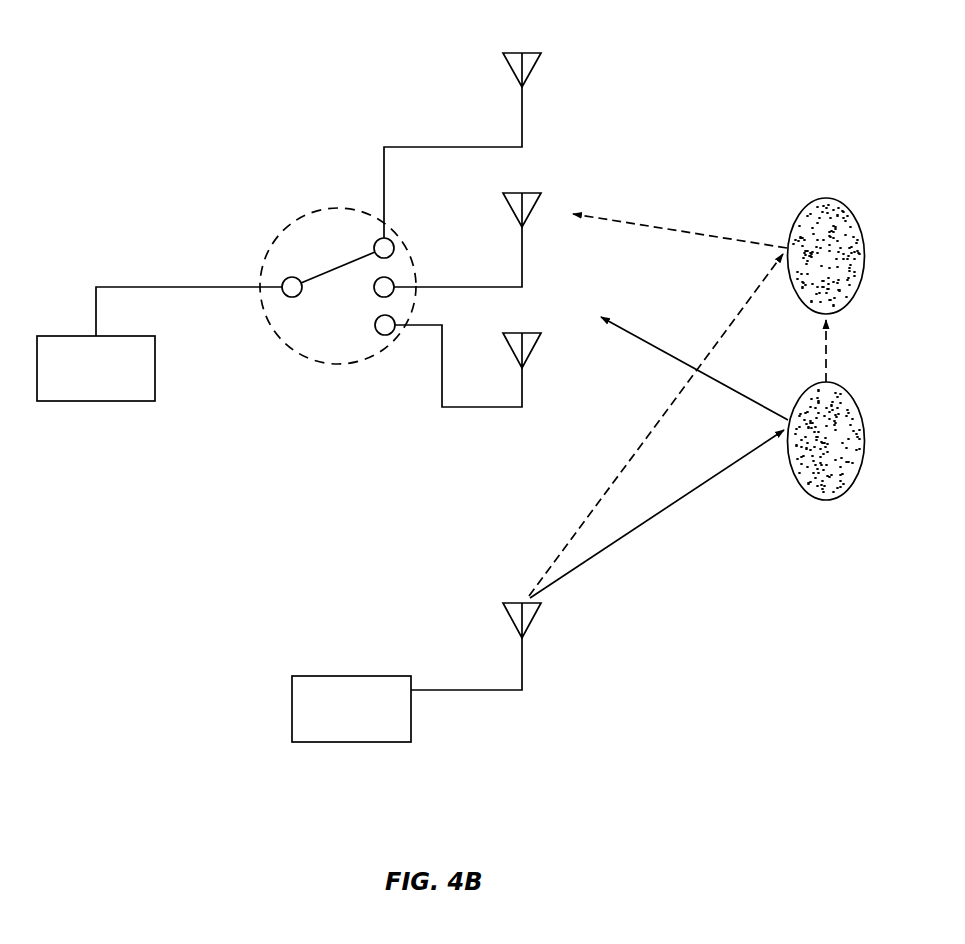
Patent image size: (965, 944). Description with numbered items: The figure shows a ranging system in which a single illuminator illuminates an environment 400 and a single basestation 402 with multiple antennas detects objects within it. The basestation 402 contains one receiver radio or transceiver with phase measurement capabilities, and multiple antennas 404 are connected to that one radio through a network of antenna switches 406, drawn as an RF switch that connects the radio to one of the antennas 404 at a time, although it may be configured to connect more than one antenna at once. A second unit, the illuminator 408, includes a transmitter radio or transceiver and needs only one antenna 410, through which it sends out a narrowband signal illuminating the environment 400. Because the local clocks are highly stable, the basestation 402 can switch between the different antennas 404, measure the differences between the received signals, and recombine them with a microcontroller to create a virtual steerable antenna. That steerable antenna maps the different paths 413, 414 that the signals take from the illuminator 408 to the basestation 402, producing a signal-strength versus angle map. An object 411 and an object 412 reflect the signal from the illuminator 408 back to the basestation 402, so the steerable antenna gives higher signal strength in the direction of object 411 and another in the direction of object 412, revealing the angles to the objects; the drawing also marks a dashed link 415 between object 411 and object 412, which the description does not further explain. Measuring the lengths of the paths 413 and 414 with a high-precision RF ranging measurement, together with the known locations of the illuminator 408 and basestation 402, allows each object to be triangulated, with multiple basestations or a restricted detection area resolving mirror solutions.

The environment 400 is at (259, 502).
The basestation 402 is at (107, 402).
The antennas 404 is at (463, 79).
The antenna switches 406 is at (278, 336).
The illuminator 408 is at (412, 717).
The antenna 410 is at (522, 662).
The object 411 is at (835, 500).
The object 412 is at (835, 198).
The path 413 is at (659, 457).
The path 414 is at (658, 405).
The path between objects 415 is at (827, 350).